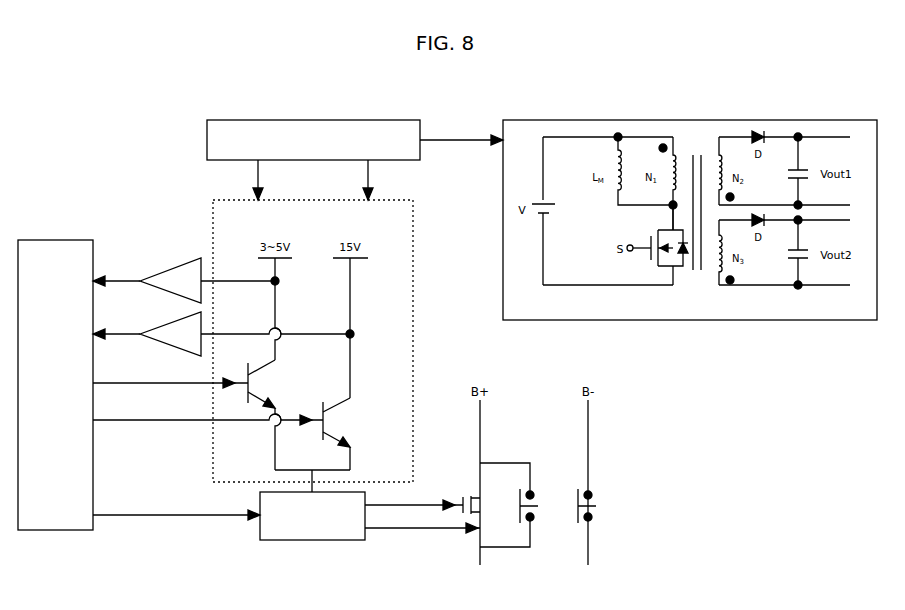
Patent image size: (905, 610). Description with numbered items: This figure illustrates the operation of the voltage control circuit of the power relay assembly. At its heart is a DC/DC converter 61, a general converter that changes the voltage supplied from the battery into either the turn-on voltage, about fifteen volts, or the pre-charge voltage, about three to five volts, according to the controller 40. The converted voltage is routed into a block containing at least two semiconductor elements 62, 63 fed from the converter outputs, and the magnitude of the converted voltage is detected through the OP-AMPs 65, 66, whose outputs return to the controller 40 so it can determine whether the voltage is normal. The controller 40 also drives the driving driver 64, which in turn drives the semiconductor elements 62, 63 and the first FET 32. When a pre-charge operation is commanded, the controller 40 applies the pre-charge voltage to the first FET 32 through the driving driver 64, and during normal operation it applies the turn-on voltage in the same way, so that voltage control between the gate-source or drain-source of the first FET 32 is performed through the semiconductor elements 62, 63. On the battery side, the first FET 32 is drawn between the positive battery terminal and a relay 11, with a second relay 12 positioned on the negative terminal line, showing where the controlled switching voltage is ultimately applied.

The controller 40 is at (87, 240).
The DC/DC converter 61 is at (398, 120).
The semiconductor element 62 is at (283, 375).
The semiconductor element 63 is at (365, 410).
The driving driver 64 is at (260, 532).
The OP-AMP 65 is at (172, 267).
The OP-AMP 66 is at (172, 321).
The first FET 32 is at (474, 493).
The first relay 11 is at (519, 494).
The second relay 12 is at (579, 494).